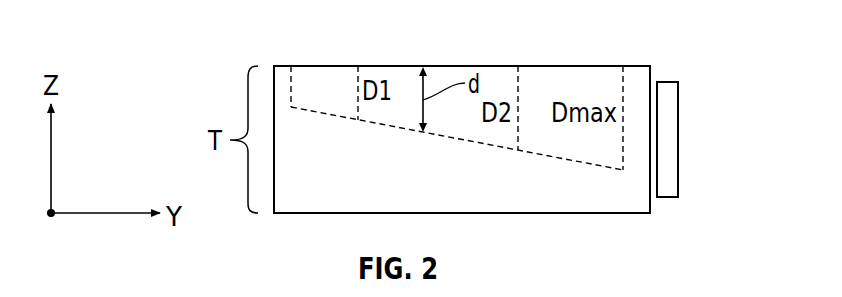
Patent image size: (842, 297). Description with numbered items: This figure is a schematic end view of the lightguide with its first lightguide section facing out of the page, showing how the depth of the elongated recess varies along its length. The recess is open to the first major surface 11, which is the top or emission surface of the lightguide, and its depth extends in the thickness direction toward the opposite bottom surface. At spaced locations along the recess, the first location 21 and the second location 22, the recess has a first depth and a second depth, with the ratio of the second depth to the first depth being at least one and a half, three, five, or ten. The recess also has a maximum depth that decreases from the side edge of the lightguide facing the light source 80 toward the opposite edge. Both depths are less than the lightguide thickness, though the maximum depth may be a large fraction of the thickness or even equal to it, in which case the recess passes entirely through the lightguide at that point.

The first major surface 11 is at (587, 66).
The first region boundary 21 is at (358, 66).
The second location 22 is at (518, 66).
The light source 80 is at (678, 139).